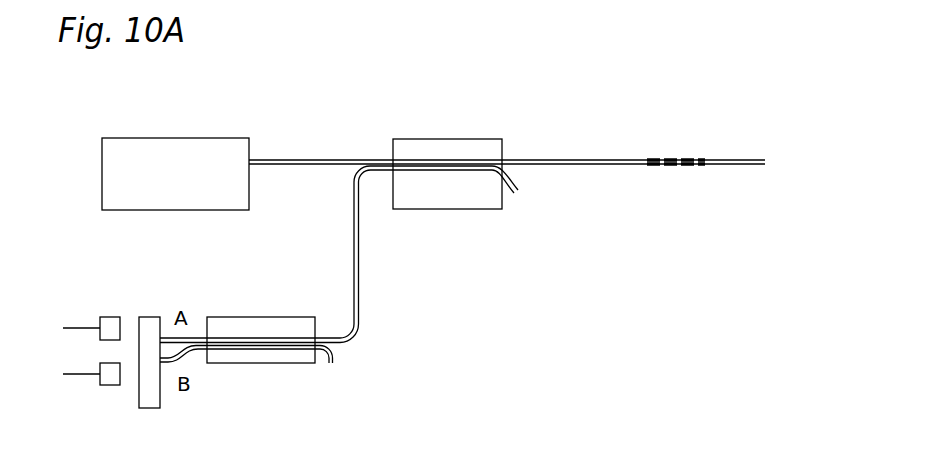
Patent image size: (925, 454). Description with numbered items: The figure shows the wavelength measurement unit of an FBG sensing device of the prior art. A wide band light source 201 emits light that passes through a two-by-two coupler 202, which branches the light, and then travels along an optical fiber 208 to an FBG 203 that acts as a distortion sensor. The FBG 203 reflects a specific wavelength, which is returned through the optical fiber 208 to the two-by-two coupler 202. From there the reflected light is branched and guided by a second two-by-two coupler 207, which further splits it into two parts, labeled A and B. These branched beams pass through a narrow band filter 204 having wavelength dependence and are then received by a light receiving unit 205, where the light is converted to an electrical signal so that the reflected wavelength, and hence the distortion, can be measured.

The wide band light source 201 is at (157, 145).
The 2×2 coupler 202 is at (438, 148).
The FBG 203 is at (683, 158).
The narrow band filter 204 is at (150, 318).
The light receiving unit 205 is at (110, 387).
The 2×2 coupler 207 is at (260, 365).
The optical fiber 208 is at (573, 166).